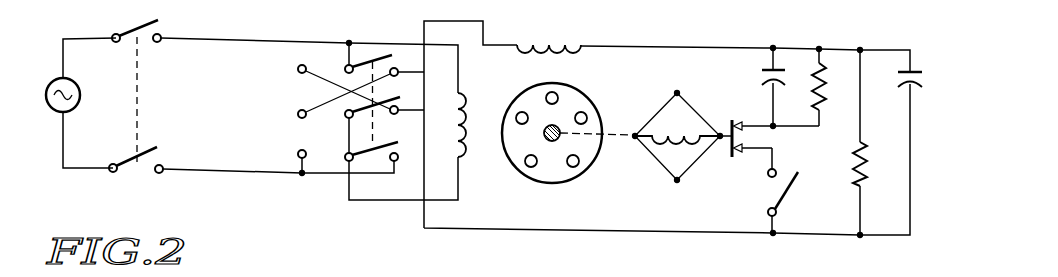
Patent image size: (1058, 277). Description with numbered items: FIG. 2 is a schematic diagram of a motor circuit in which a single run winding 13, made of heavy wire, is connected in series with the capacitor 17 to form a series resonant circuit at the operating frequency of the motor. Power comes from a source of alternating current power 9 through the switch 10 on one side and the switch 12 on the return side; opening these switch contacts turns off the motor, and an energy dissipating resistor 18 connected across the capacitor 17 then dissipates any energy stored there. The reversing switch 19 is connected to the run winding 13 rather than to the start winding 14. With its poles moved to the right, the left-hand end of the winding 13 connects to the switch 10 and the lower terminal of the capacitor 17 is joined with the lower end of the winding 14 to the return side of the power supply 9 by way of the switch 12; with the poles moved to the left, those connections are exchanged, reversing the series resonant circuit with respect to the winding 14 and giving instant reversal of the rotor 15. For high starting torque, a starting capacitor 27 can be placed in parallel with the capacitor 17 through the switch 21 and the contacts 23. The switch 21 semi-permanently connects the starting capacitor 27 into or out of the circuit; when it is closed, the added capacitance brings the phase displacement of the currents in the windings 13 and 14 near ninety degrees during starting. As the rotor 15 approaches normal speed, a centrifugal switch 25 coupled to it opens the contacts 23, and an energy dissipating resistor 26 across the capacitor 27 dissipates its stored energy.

The source of alternating current power 9 is at (58, 113).
The switch 10 is at (121, 30).
The switch 12 is at (119, 160).
The run winding 13 is at (547, 51).
The start winding 14 is at (466, 156).
The rotor 15 is at (597, 113).
The capacitor 17 is at (915, 70).
The energy dissipating resistor 18 is at (867, 159).
The reversing switch 19 is at (288, 100).
The switch 21 is at (786, 196).
The switch contacts 23 is at (731, 119).
The centrifugal switch 25 is at (657, 152).
The energy dissipating resistor 26 is at (824, 102).
The starting capacitor 27 is at (762, 70).